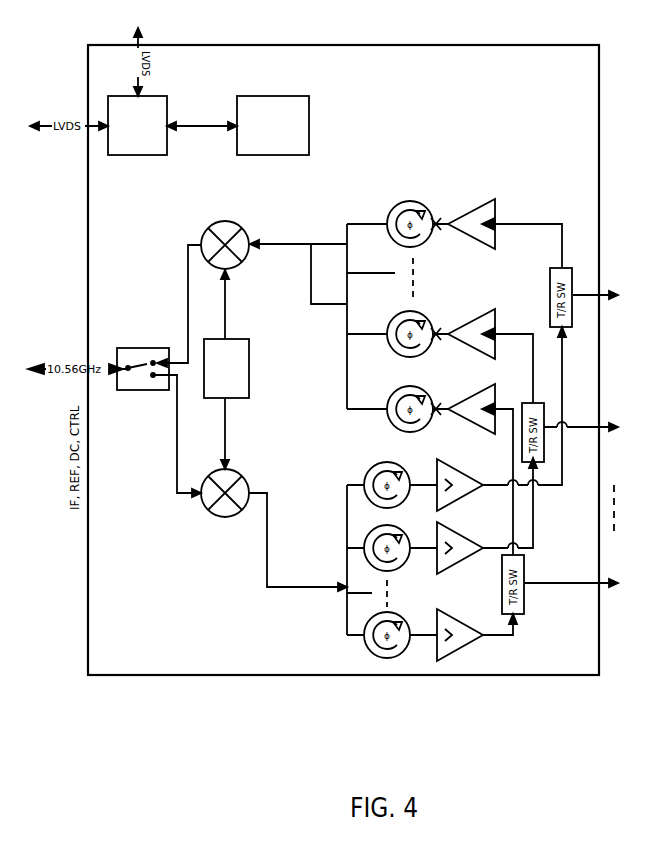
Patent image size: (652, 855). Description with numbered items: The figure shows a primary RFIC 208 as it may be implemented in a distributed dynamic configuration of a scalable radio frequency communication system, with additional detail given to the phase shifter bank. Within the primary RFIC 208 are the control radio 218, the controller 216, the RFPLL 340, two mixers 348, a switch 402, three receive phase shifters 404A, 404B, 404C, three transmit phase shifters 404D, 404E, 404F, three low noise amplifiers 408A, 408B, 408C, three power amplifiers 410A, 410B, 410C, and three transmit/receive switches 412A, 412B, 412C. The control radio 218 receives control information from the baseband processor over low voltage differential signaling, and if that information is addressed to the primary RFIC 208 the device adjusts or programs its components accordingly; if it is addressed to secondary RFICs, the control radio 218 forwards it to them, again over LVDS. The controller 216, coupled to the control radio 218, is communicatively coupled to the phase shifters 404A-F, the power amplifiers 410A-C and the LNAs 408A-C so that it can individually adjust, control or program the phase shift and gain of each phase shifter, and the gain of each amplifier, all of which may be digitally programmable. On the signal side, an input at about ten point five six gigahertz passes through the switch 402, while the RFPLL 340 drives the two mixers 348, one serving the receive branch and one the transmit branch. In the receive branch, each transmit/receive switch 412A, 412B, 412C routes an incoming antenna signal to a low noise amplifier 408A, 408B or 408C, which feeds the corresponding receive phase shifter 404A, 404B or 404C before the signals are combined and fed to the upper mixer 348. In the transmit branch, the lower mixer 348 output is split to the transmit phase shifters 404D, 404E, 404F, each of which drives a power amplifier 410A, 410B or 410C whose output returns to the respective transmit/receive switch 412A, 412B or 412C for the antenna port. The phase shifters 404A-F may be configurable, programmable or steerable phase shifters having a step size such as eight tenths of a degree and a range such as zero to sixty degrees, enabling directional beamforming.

The primary RFIC 208 is at (539, 45).
The control radio 218 is at (138, 155).
The controller 216 is at (275, 155).
The mixers 348 is at (250, 214).
The RFPLL 340 is at (249, 377).
The switch 402 is at (138, 348).
The receive phase shifter 404A is at (412, 201).
The receive phase shifter 404B is at (413, 311).
The receive phase shifter 404C is at (400, 390).
The transmit phase shifter 404D is at (406, 456).
The transmit phase shifter 404E is at (408, 523).
The transmit phase shifter 404F is at (410, 608).
The low noise amplifier 408A is at (485, 204).
The low noise amplifier 408B is at (485, 314).
The low noise amplifier 408C is at (468, 398).
The power amplifier 410A is at (456, 466).
The power amplifier 410B is at (476, 531).
The power amplifier 410C is at (452, 617).
The transmit/receive switch 412A is at (549, 267).
The transmit/receive switch 412B is at (521, 400).
The transmit/receive switch 412C is at (524, 573).